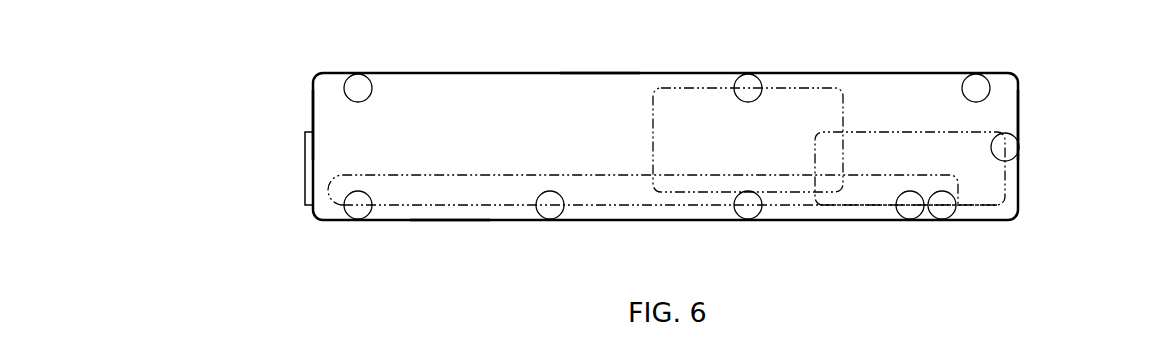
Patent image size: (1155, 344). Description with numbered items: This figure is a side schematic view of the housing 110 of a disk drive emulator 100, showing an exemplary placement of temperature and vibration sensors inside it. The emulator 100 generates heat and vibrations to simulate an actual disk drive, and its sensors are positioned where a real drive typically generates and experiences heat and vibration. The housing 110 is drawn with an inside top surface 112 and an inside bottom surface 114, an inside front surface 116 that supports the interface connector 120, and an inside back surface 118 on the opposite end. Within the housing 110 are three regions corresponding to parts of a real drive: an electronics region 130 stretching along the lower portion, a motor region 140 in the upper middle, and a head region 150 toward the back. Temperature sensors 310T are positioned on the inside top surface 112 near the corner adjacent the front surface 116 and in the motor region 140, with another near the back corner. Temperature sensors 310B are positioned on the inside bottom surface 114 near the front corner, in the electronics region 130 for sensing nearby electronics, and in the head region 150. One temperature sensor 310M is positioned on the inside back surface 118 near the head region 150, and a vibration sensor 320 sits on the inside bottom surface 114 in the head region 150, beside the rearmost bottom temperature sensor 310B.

The disk drive emulator 100 is at (283, 70).
The housing 110 is at (320, 221).
The inside top surface 112 is at (595, 80).
The inside bottom surface 114 is at (448, 212).
The inside front surface 116 is at (323, 126).
The inside back surface 118 is at (1012, 113).
The interface connector 120 is at (305, 175).
The electronics region 130 is at (530, 175).
The motor region 140 is at (843, 93).
The head region 150 is at (1007, 195).
The top temperature sensor 310T is at (357, 75).
The bottom temperature sensor 310B is at (360, 219).
The back temperature sensor 310M is at (1019, 143).
The vibration sensor 320 is at (945, 219).